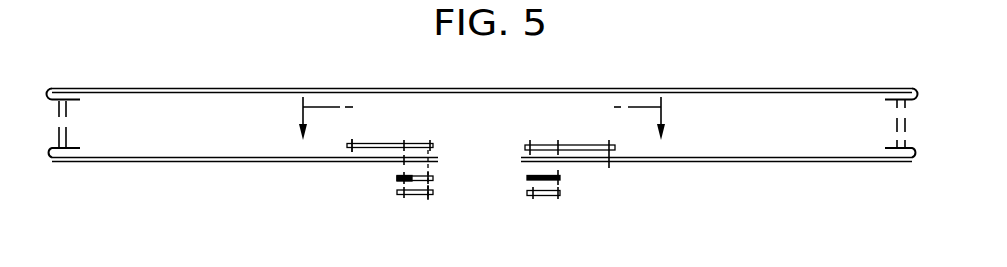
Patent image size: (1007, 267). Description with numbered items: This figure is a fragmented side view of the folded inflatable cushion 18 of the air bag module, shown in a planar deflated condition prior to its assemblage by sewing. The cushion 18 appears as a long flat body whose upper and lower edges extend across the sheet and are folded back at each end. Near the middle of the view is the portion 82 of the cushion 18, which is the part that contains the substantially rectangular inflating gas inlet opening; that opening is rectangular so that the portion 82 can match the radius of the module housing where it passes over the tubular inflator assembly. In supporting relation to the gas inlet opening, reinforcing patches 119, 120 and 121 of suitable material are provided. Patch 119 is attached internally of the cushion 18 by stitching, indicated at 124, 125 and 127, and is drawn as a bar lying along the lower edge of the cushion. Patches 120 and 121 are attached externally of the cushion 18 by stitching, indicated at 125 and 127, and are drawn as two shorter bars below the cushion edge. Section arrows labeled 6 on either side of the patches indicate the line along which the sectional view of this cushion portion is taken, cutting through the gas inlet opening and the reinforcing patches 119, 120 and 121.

The folded inflatable cushion 18 is at (254, 89).
The section line for FIG. 6 is at (478, 116).
The reinforcing patch 119 is at (392, 144).
The reinforcing patch 120 is at (433, 178).
The reinforcing patch 121 is at (433, 191).
The stitching 124 is at (351, 153).
The stitching 125 is at (397, 178).
The stitching 127 is at (430, 198).
The portion of the folded inflatable cushion 82 is at (572, 182).